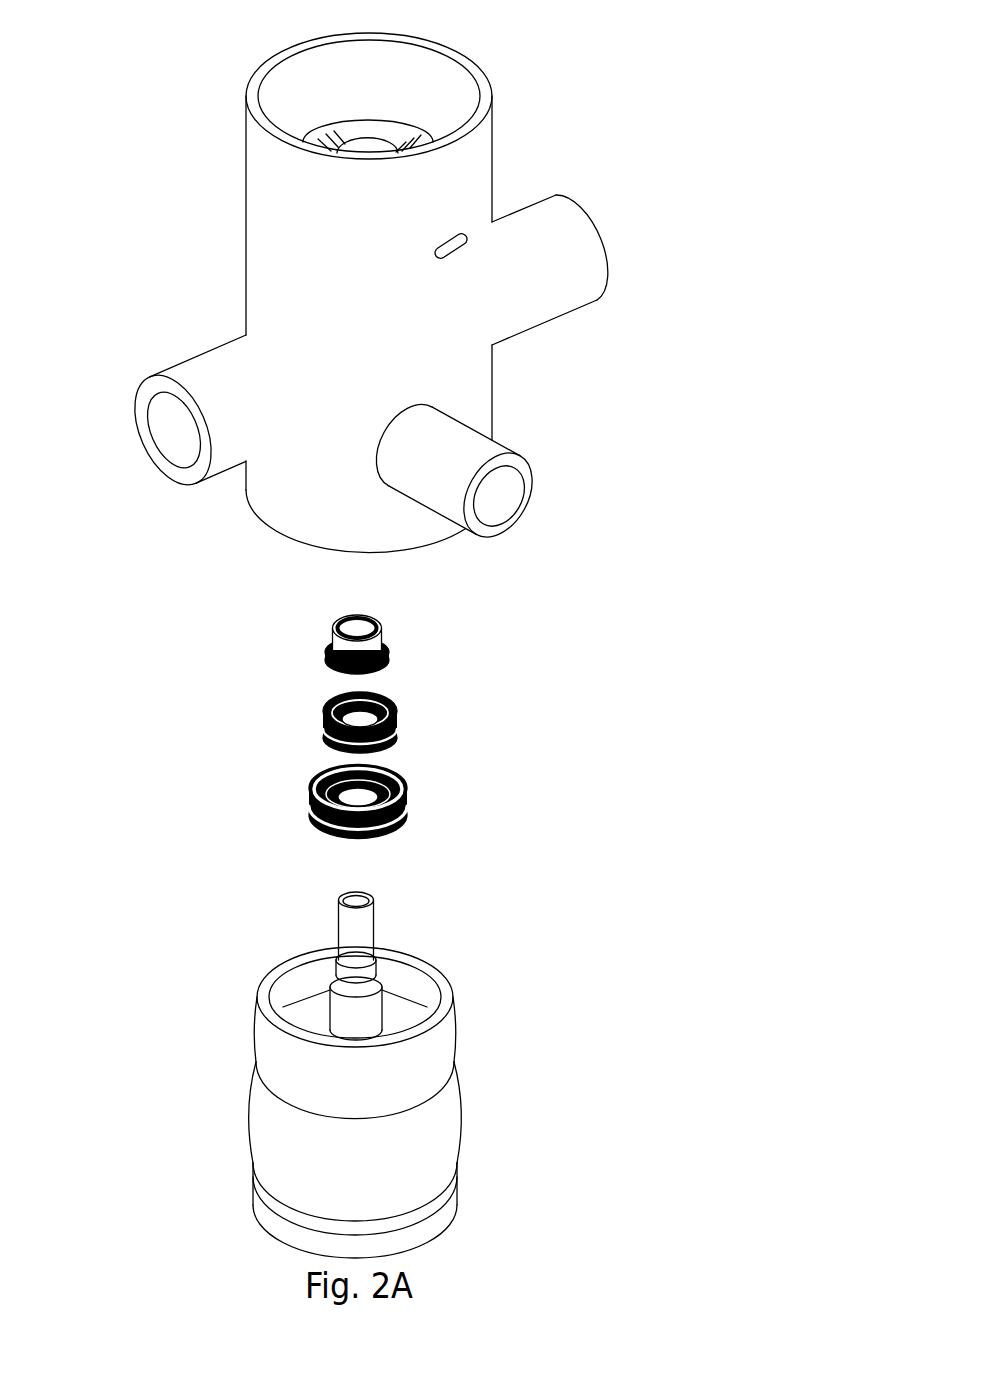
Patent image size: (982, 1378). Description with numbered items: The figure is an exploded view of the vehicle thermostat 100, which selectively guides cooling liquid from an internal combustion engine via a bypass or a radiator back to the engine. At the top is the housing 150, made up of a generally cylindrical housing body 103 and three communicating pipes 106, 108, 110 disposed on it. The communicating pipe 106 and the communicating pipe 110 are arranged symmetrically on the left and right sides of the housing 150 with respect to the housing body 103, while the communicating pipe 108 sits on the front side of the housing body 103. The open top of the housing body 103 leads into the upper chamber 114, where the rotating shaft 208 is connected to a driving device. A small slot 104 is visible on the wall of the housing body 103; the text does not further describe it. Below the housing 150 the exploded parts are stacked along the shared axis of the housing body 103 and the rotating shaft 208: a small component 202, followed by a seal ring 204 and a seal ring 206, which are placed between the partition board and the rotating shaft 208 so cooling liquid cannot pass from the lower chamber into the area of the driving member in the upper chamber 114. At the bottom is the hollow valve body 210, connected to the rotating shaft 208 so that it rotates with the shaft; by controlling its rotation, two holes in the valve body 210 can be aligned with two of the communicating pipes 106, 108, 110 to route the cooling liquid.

The vehicle thermostat 100 is at (435, 632).
The housing 150 is at (356, 280).
The housing body 103 is at (255, 202).
The upper chamber 114 is at (423, 68).
The slot 104 is at (452, 236).
The communicating pipe 106 is at (143, 388).
The communicating pipe 108 is at (524, 470).
The communicating pipe 110 is at (595, 223).
The cap 202 is at (384, 638).
The seal ring 204 is at (392, 721).
The seal ring 206 is at (399, 797).
The rotating shaft 208 is at (372, 894).
The hollow valve body 210 is at (325, 1051).